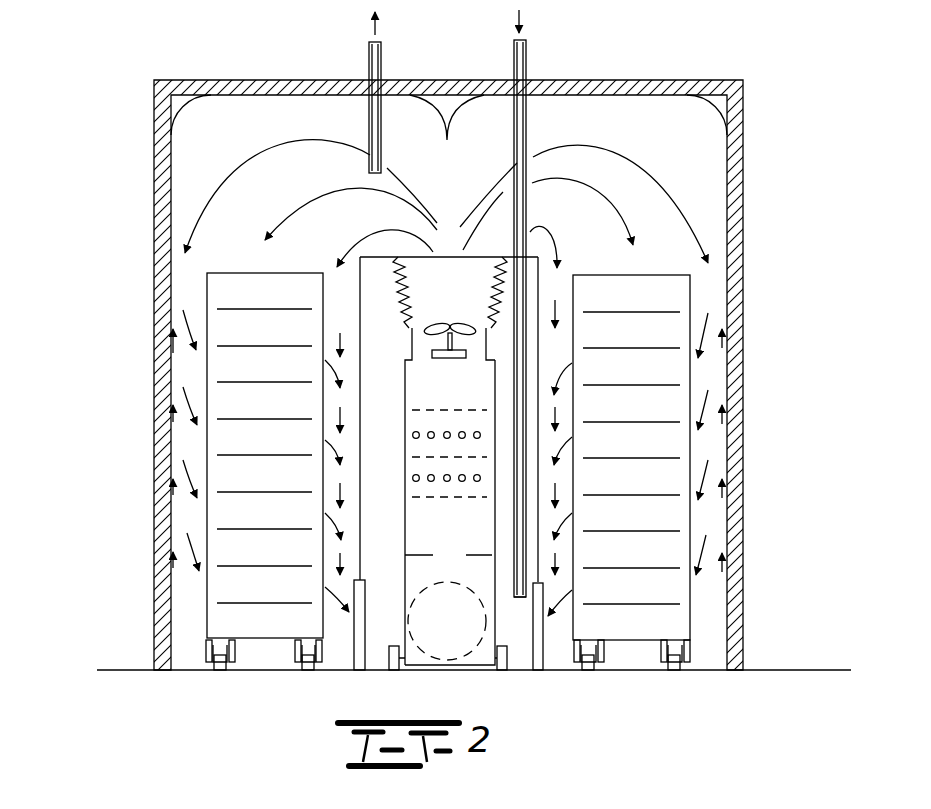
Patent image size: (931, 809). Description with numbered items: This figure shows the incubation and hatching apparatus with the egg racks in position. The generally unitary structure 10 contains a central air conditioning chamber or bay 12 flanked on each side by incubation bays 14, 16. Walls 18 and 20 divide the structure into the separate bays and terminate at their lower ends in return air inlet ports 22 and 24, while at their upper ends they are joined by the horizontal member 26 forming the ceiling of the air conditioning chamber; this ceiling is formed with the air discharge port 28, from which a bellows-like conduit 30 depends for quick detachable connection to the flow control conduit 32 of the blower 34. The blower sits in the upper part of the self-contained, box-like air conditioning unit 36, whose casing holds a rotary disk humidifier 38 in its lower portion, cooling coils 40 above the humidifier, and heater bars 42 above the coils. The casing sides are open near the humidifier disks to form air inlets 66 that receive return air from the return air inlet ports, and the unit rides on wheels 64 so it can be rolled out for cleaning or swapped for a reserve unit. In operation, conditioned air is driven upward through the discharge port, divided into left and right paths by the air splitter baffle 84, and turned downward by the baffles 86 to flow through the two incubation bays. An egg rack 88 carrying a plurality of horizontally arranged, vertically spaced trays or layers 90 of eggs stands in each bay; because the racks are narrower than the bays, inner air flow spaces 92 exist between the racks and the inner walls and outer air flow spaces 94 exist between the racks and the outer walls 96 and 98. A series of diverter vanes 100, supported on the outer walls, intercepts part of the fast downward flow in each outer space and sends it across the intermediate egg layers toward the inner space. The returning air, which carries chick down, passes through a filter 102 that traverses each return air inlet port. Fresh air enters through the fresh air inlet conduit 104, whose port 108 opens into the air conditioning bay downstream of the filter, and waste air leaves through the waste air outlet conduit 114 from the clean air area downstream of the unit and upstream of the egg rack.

The unitary structure 10 is at (690, 79).
The air conditioning chamber or bay 12 is at (372, 278).
The incubation bay 14 is at (149, 591).
The incubation bay 16 is at (745, 162).
The wall 18 is at (360, 320).
The wall 20 is at (538, 348).
The return air inlet port 22 is at (360, 580).
The return air inlet port 24 is at (540, 583).
The horizontal member 26 is at (378, 257).
The air discharge port 28 is at (447, 257).
The bellows-like conduit 30 is at (408, 302).
The flow control conduit 32 is at (411, 348).
The blower 34 is at (447, 360).
The air conditioning unit 36 is at (491, 508).
The rotary disk humidifier 38 is at (458, 663).
The cooling coils 40 is at (412, 477).
The heater bars 42 is at (412, 435).
The wheels 64 is at (394, 661).
The air inlets 66 is at (448, 554).
The air splitter baffle 84 is at (444, 98).
The baffles 86 is at (178, 100).
The egg rack 88 is at (205, 299).
The trays or layers 90 is at (207, 447).
The inner air flow spaces 92 is at (333, 278).
The outer air flow spaces 94 is at (187, 368).
The outer wall 96 is at (153, 500).
The outer wall 98 is at (742, 412).
The diverter vanes 100 is at (183, 417).
The filter 102 is at (352, 650).
The fresh air inlet conduit 104 is at (527, 115).
The port 108 is at (520, 598).
The waste air outlet conduit 114 is at (369, 110).